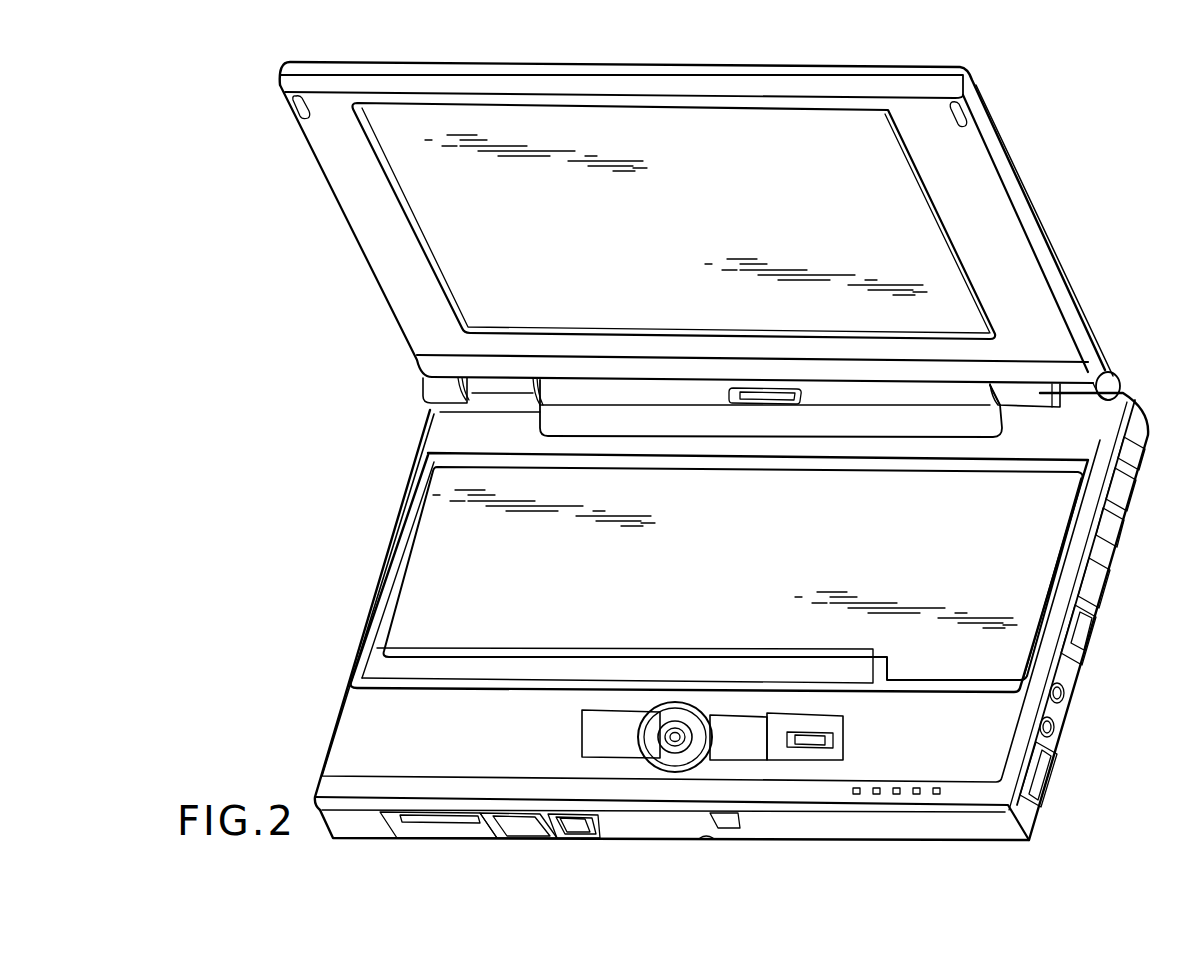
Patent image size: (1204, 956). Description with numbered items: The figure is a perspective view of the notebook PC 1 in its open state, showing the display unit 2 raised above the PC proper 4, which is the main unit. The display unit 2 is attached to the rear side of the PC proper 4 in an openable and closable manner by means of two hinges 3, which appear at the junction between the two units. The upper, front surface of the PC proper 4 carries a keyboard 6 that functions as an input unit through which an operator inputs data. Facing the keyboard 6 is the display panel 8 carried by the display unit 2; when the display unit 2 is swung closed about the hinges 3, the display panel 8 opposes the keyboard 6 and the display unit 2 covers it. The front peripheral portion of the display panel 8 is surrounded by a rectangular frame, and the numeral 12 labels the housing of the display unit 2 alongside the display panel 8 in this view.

The notebook PC 1 is at (1100, 107).
The display unit 2 is at (1025, 285).
The hinges 3 is at (484, 387).
The PC proper (main unit) 4 is at (1136, 438).
The keyboard 6 is at (432, 546).
The display panel 8 is at (440, 210).
The display housing 12 is at (343, 192).